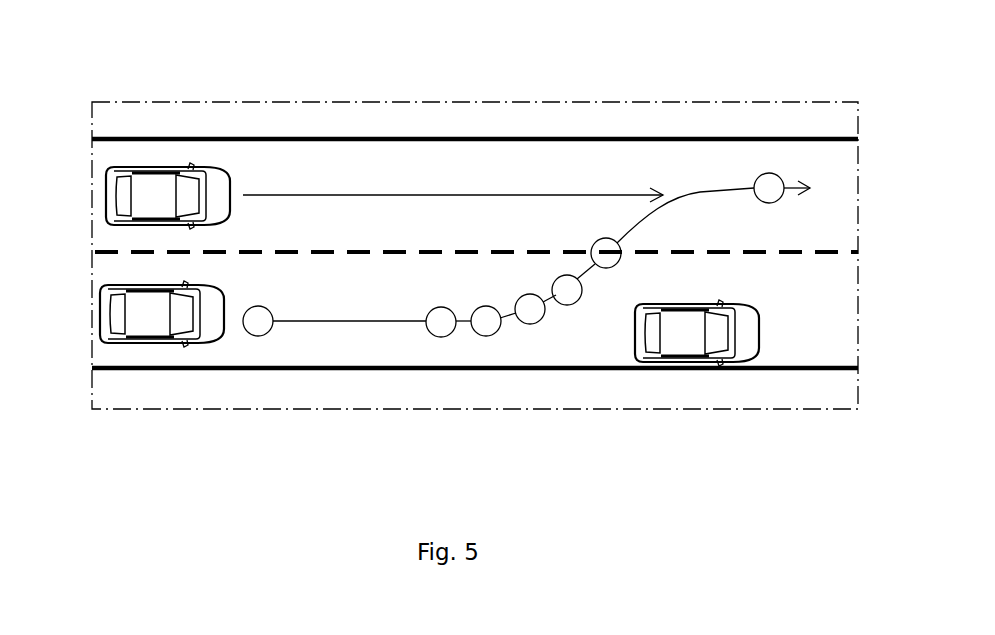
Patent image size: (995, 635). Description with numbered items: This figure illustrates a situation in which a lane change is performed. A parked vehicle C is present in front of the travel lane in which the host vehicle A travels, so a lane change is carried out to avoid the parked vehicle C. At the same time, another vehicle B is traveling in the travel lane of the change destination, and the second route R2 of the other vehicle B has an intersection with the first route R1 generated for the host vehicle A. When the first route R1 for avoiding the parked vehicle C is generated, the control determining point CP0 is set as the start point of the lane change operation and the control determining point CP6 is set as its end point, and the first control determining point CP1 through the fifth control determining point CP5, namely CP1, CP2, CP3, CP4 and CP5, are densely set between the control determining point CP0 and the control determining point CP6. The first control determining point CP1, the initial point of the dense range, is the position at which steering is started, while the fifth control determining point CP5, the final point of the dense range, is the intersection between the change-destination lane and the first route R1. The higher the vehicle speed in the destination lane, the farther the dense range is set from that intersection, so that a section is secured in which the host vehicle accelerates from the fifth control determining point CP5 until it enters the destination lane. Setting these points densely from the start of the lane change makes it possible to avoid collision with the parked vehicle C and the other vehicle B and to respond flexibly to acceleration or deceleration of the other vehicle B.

The host vehicle A is at (118, 308).
The other vehicle B is at (118, 183).
The parked vehicle C is at (696, 342).
The first route R1 is at (355, 321).
The second route R2 is at (378, 195).
The control determining point CP0 is at (258, 337).
The first control determining point CP1 is at (441, 337).
The second control determining point CP2 is at (486, 337).
The third control determining point CP3 is at (530, 324).
The fourth control determining point CP4 is at (567, 305).
The fifth control determining point CP5 is at (606, 238).
The control determining point CP6 is at (769, 173).